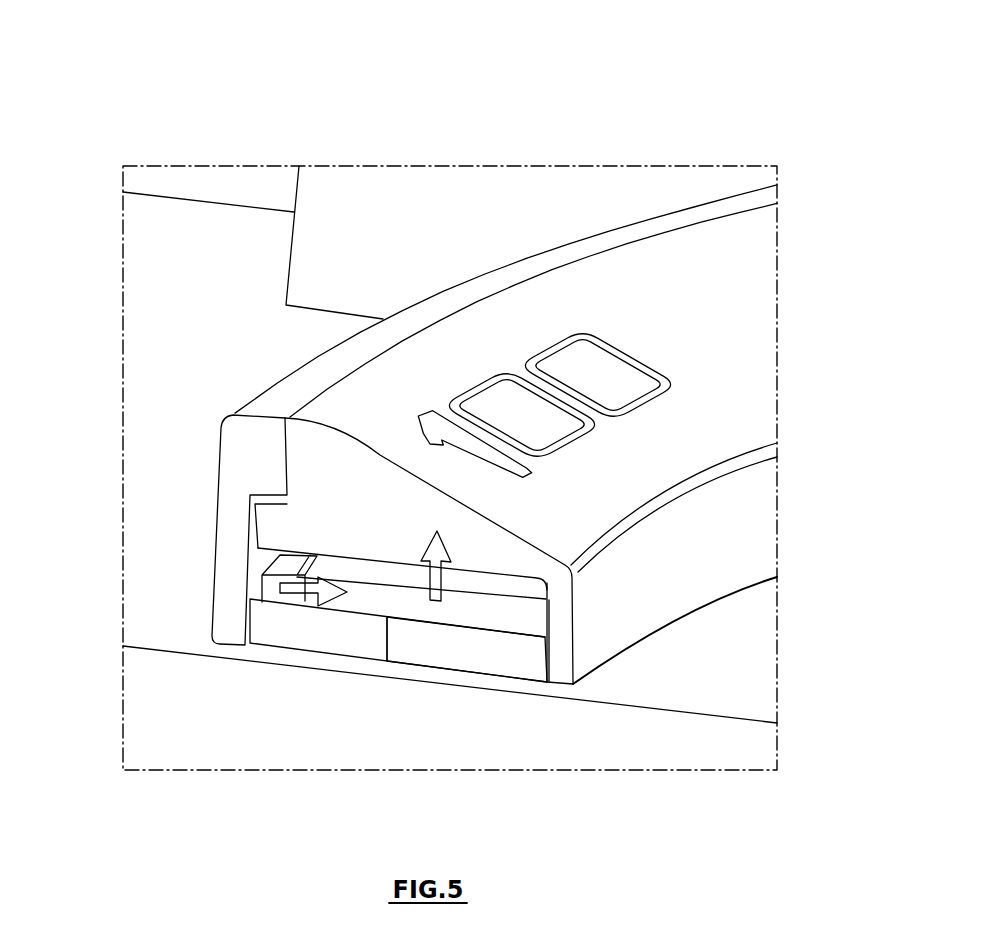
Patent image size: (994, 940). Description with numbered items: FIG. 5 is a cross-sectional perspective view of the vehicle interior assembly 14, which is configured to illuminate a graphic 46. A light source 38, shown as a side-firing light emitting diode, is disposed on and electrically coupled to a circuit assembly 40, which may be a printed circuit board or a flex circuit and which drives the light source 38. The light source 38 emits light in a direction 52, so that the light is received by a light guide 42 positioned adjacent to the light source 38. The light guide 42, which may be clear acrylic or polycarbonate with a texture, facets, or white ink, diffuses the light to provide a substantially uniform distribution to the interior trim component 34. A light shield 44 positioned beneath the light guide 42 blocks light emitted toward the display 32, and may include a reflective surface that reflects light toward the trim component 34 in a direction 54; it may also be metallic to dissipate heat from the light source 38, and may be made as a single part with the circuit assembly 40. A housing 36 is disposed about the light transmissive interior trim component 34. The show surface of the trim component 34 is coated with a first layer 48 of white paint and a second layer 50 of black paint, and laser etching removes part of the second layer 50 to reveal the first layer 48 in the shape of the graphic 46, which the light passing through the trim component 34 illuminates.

The aquarium light assembly 14 is at (543, 112).
The display 32 is at (713, 648).
The interior trim component 34 is at (415, 392).
The housing 36 is at (228, 625).
The light source 38 is at (270, 589).
The circuit assembly 40 is at (322, 643).
The light guide 42 is at (377, 597).
The light shield 44 is at (487, 657).
The graphic 46 is at (615, 347).
The first layer 48 is at (492, 383).
The second layer 50 is at (413, 374).
The direction 52 is at (300, 590).
The direction 54 is at (425, 592).